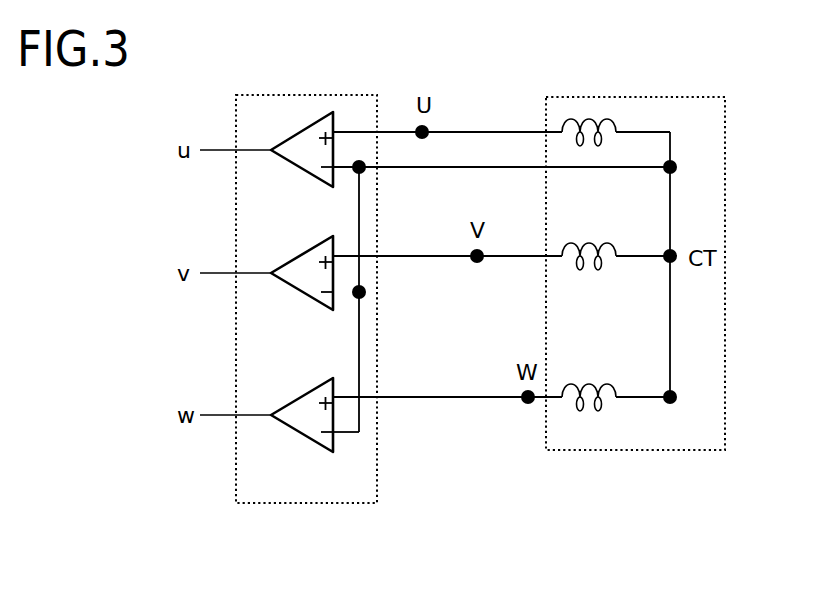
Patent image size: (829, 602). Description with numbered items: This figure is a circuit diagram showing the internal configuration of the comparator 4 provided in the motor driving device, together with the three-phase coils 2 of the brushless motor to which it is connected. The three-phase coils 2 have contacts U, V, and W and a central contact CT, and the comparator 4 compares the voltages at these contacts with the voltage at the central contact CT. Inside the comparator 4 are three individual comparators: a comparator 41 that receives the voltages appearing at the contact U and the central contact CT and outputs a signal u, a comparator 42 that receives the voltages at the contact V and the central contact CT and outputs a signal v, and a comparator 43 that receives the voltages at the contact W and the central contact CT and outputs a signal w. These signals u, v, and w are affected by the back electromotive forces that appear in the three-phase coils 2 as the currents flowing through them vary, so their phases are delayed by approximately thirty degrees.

The three-phase coils 2 is at (638, 450).
The comparator 4 is at (307, 503).
The comparator 41 is at (303, 168).
The comparator 42 is at (303, 292).
The comparator 43 is at (303, 432).